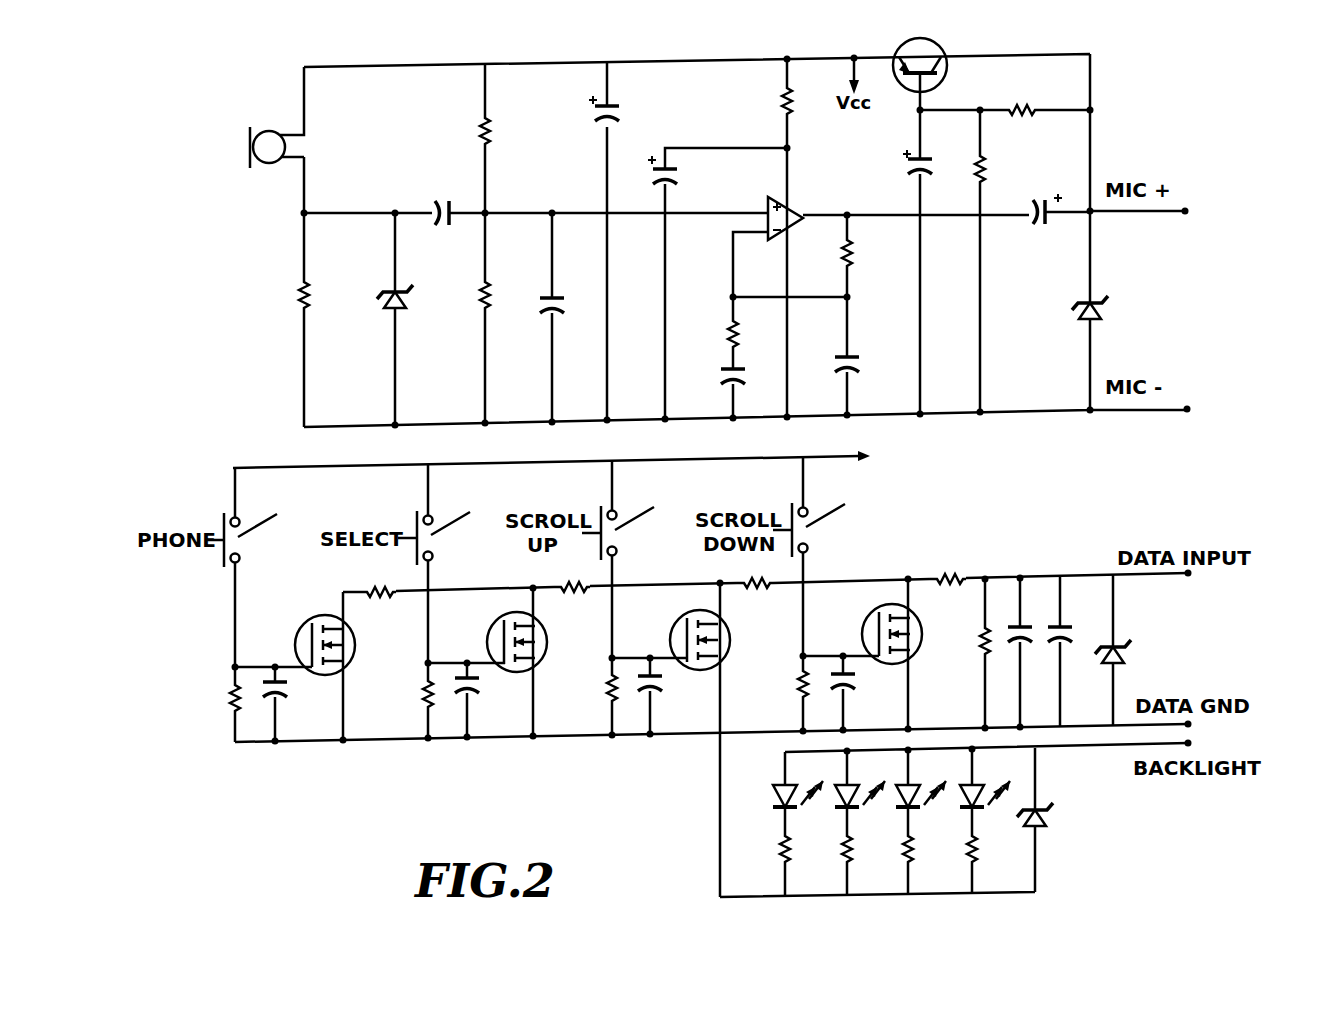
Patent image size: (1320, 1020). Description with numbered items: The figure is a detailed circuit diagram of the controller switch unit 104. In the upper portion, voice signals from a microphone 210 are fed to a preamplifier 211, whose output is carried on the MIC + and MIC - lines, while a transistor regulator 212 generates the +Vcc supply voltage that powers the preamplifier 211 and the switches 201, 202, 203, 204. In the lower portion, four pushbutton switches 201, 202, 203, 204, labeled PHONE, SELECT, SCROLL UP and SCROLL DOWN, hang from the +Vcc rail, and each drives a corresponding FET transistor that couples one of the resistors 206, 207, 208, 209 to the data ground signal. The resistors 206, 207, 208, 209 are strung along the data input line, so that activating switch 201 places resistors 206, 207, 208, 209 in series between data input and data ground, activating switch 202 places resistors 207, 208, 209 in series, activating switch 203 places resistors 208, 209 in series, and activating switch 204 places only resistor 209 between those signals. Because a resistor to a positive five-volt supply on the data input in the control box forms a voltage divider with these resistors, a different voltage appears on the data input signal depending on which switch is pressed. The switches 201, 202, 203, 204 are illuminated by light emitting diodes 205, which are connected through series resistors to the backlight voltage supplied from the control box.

The controller switch unit 104 is at (510, 788).
The switch 201 is at (261, 567).
The switch 202 is at (453, 563).
The switch 203 is at (636, 559).
The switch 204 is at (826, 556).
The light emitting diodes 205 is at (750, 828).
The resistor 206 is at (383, 598).
The resistor 207 is at (575, 598).
The resistor 208 is at (758, 596).
The resistor 209 is at (957, 556).
The microphone 210 is at (245, 157).
The preamplifier 211 is at (797, 200).
The transistor regulator 212 is at (948, 78).